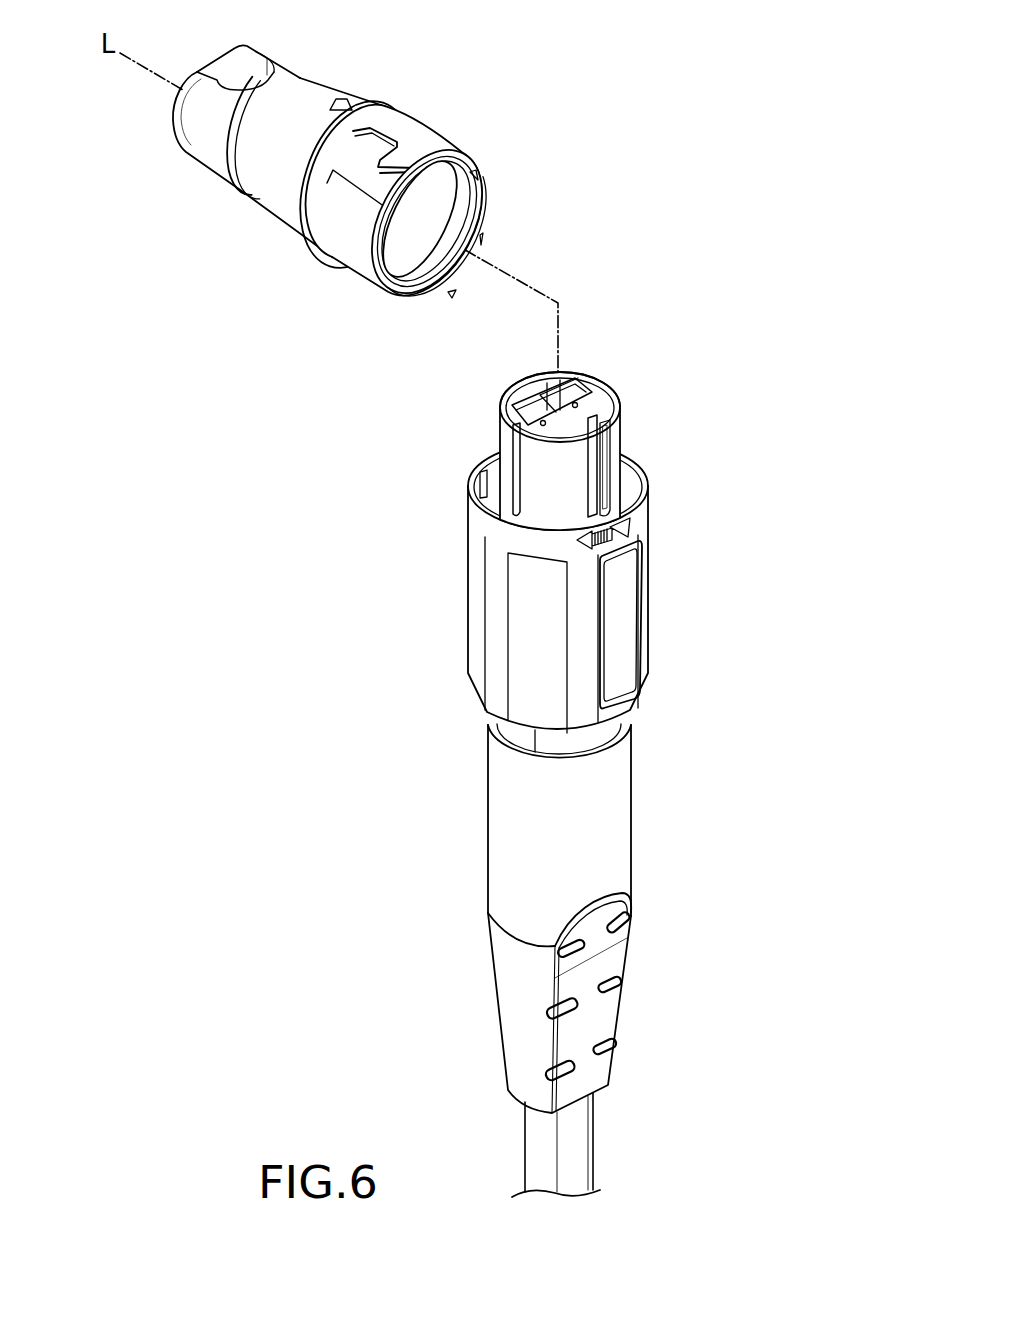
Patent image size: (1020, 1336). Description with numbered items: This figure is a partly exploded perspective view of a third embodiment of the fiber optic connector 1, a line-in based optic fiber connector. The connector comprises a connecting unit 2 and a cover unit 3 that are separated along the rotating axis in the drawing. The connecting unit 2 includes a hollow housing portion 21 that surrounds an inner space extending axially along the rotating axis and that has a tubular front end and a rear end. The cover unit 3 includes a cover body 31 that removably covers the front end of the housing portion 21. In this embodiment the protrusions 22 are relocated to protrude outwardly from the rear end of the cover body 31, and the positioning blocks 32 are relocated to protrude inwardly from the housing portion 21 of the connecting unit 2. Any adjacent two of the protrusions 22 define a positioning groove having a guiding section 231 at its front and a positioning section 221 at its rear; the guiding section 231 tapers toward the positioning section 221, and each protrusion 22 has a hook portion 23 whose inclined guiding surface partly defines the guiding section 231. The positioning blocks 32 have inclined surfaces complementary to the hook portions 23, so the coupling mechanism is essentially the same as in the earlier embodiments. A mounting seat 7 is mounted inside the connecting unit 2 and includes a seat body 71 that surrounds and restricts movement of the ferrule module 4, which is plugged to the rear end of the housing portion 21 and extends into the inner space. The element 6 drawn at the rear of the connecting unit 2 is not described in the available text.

The fiber optic connector 1 is at (568, 734).
The connecting unit 2 is at (568, 587).
The cover unit 3 is at (351, 176).
The ferrule module 4 is at (503, 404).
The cable 6 is at (497, 826).
The mounting seat 7 is at (593, 440).
The housing portion 21 is at (478, 622).
The protrusions 22 is at (371, 186).
The hook portion 23 is at (439, 230).
The cover body 31 is at (258, 190).
The positioning blocks 32 is at (475, 482).
The seat body 71 is at (617, 430).
The positioning section 221 is at (333, 122).
The guiding section 231 is at (405, 210).